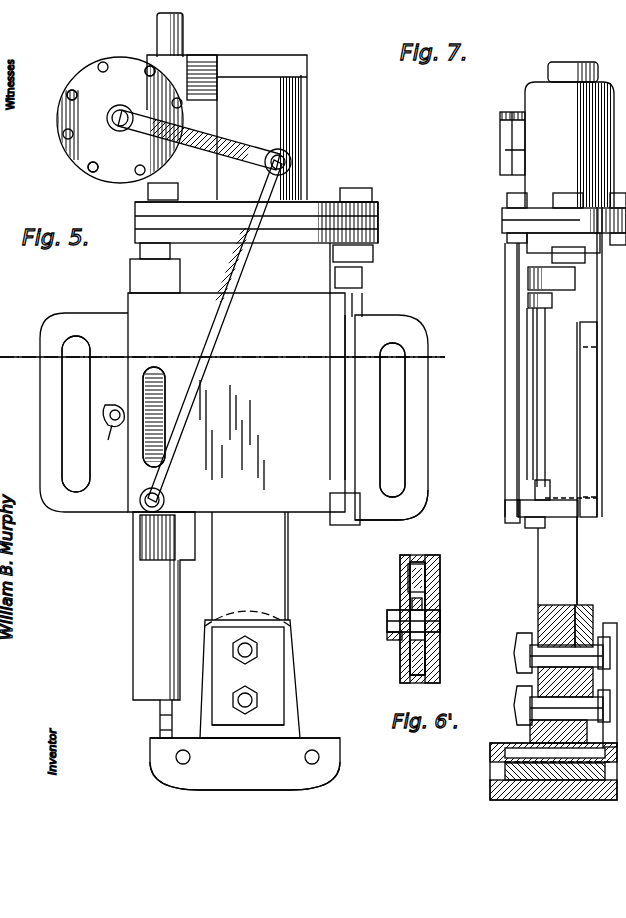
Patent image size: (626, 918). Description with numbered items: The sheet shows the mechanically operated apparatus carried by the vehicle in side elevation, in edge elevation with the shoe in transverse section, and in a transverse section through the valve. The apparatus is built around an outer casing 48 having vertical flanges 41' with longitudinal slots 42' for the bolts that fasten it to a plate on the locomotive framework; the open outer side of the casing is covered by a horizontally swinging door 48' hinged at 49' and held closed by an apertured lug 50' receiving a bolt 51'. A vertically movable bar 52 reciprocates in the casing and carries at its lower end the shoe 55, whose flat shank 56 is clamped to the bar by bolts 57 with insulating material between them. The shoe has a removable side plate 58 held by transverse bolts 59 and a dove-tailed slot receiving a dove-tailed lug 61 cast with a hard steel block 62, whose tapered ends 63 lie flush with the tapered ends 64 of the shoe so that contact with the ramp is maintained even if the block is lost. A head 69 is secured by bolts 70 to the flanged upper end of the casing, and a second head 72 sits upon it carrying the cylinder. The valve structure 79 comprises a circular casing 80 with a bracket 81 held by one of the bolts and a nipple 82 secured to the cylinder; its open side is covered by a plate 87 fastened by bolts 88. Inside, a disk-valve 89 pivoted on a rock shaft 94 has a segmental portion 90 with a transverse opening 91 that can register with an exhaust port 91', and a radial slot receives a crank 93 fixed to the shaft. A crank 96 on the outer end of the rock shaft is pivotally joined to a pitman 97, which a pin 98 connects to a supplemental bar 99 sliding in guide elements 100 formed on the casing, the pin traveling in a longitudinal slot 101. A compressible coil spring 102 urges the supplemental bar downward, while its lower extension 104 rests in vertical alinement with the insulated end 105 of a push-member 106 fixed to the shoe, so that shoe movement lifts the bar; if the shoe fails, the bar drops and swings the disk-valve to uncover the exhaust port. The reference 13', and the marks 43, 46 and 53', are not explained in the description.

In FIG. 5, the center line / axis 13' is at (235, 358).
In FIG. 5, the vertical flanges 41' is at (231, 408).
In FIG. 5, the longitudinal slots 42' is at (233, 416).
In FIG. 5, the housing / cylinder body 43 is at (227, 184).
In FIG. 7, the housing / cylinder body 43 is at (569, 134).
In FIG. 5, the cross bar direction 46 is at (393, 214).
In FIG. 5, the outer casing 48 is at (245, 377).
In FIG. 7, the horizontally swinging door 48' is at (523, 406).
In FIG. 5, the hinge 49' is at (391, 512).
In FIG. 7, the hinge 49' is at (521, 504).
In FIG. 5, the lug 50' is at (108, 444).
In FIG. 5, the bolt 51' is at (109, 406).
In FIG. 5, the vertically movable bar 52 is at (250, 566).
In FIG. 7, the vertically movable bar 52 is at (578, 568).
In FIG. 5, the bracket plate 53' is at (274, 712).
In FIG. 5, the shoe 55 is at (342, 737).
In FIG. 5, the flat shank 56 is at (290, 655).
In FIG. 5, the bolts 57 is at (258, 700).
In FIG. 7, the bolts 57 is at (540, 700).
In FIG. 5, the removable side plate 58 is at (290, 775).
In FIG. 7, the removable side plate 58 is at (495, 760).
In FIG. 5, the transverse bolts 59 is at (240, 757).
In FIG. 7, the dove-tailed lug 61 is at (520, 768).
In FIG. 7, the hard steel block 62 is at (520, 786).
In FIG. 5, the tapered ends of block 63 is at (160, 772).
In FIG. 5, the tapered ends of shoe 64 is at (155, 762).
In FIG. 5, the head 69 is at (345, 222).
In FIG. 7, the head 69 is at (515, 222).
In FIG. 5, the bolts 70 is at (372, 195).
In FIG. 5, the second head 72 is at (320, 210).
In FIG. 5, the valve structure 79 is at (75, 160).
In FIG. 6', the circular casing 80 is at (426, 562).
In FIG. 5, the bracket 81 is at (150, 190).
In FIG. 5, the nipple 82 is at (148, 64).
In FIG. 5, the plate 87 is at (70, 140).
In FIG. 6', the plate 87 is at (400, 572).
In FIG. 5, the bolts 88 is at (125, 178).
In FIG. 6', the disk-valve 89 is at (440, 642).
In FIG. 6', the segmental portion 90 is at (410, 588).
In FIG. 6', the transverse opening 91 is at (449, 619).
In FIG. 6', the exhaust port 91' is at (445, 618).
In FIG. 6', the crank 93 is at (440, 613).
In FIG. 5, the rock shaft 94 is at (114, 114).
In FIG. 6', the rock shaft 94 is at (440, 628).
In FIG. 5, the crank 96 is at (195, 150).
In FIG. 6', the crank 96 is at (395, 638).
In FIG. 7, the crank 96 is at (500, 150).
In FIG. 5, the pitman 97 is at (220, 366).
In FIG. 5, the pin 98 is at (140, 508).
In FIG. 5, the supplemental vertically movable bar 99 is at (140, 620).
In FIG. 5, the guide elements 100 is at (135, 560).
In FIG. 5, the longitudinal slot 101 is at (168, 403).
In FIG. 5, the compressible coil spring 102 is at (168, 445).
In FIG. 5, the extension 104 is at (160, 700).
In FIG. 5, the insulated end 105 is at (165, 715).
In FIG. 5, the push-member 106 is at (168, 730).